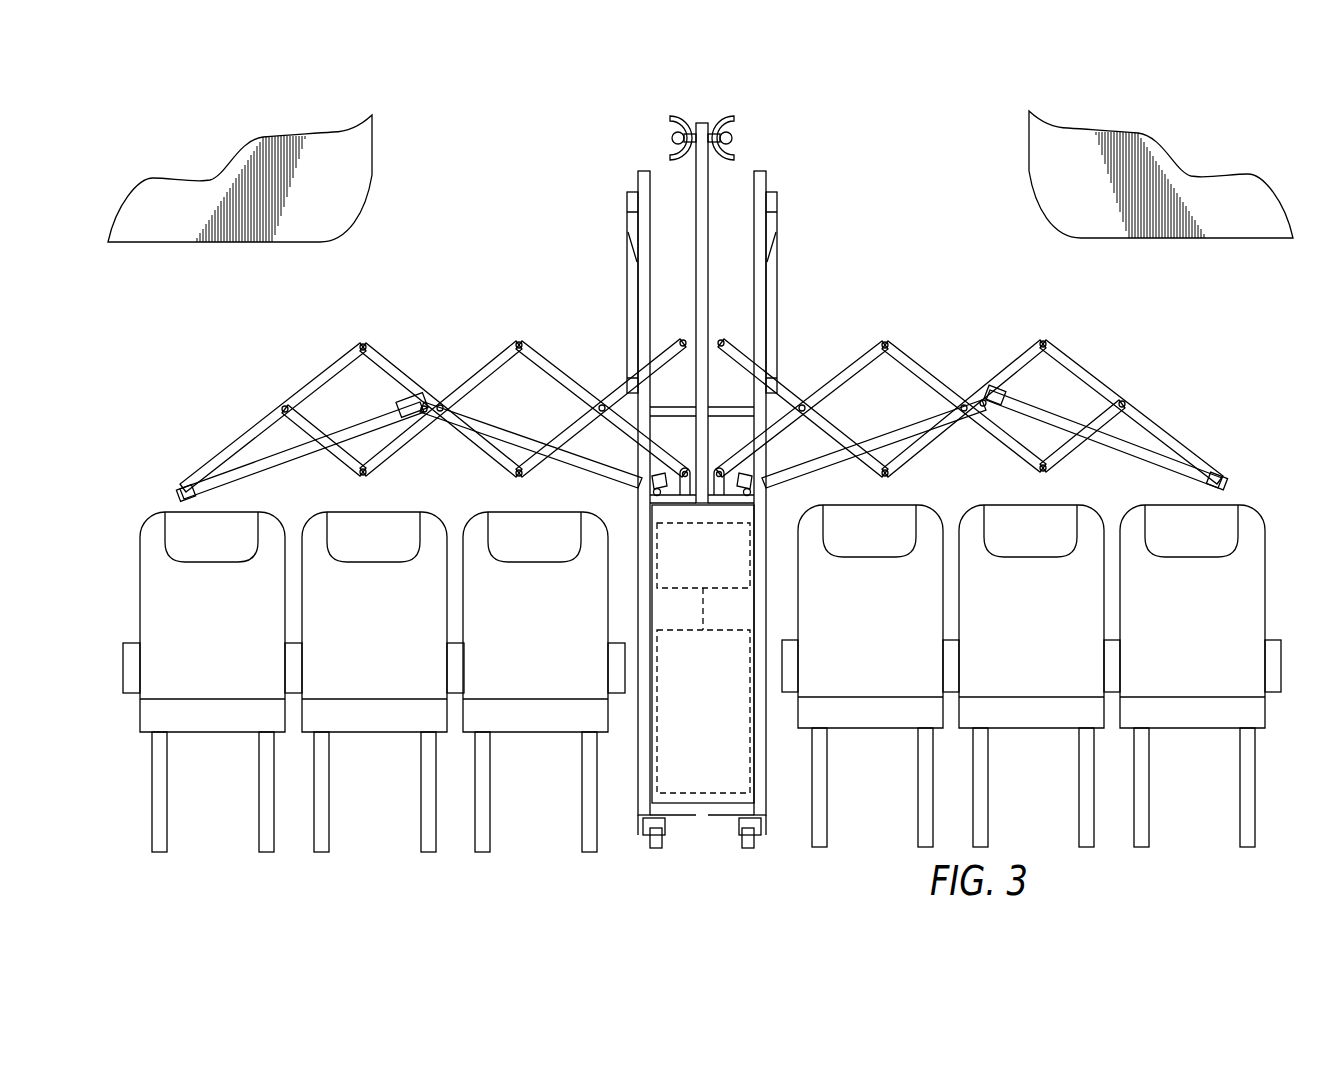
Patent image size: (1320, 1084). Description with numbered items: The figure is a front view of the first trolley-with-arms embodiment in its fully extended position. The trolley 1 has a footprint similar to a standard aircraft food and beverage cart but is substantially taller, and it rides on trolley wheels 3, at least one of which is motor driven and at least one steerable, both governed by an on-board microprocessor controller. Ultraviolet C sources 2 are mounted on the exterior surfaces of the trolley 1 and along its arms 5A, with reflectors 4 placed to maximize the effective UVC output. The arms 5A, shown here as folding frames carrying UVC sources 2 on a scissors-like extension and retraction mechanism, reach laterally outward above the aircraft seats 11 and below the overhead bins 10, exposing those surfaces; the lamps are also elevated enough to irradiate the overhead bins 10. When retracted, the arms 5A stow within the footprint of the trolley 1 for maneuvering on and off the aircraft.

The trolley 1 is at (727, 501).
The UVC source 2 is at (277, 448).
The trolley wheels 3 is at (650, 843).
The reflector 4 is at (672, 122).
The scissor linkage assembly 5A is at (701, 307).
The overhead bins 10 is at (372, 172).
The aircraft seats 11 is at (150, 525).